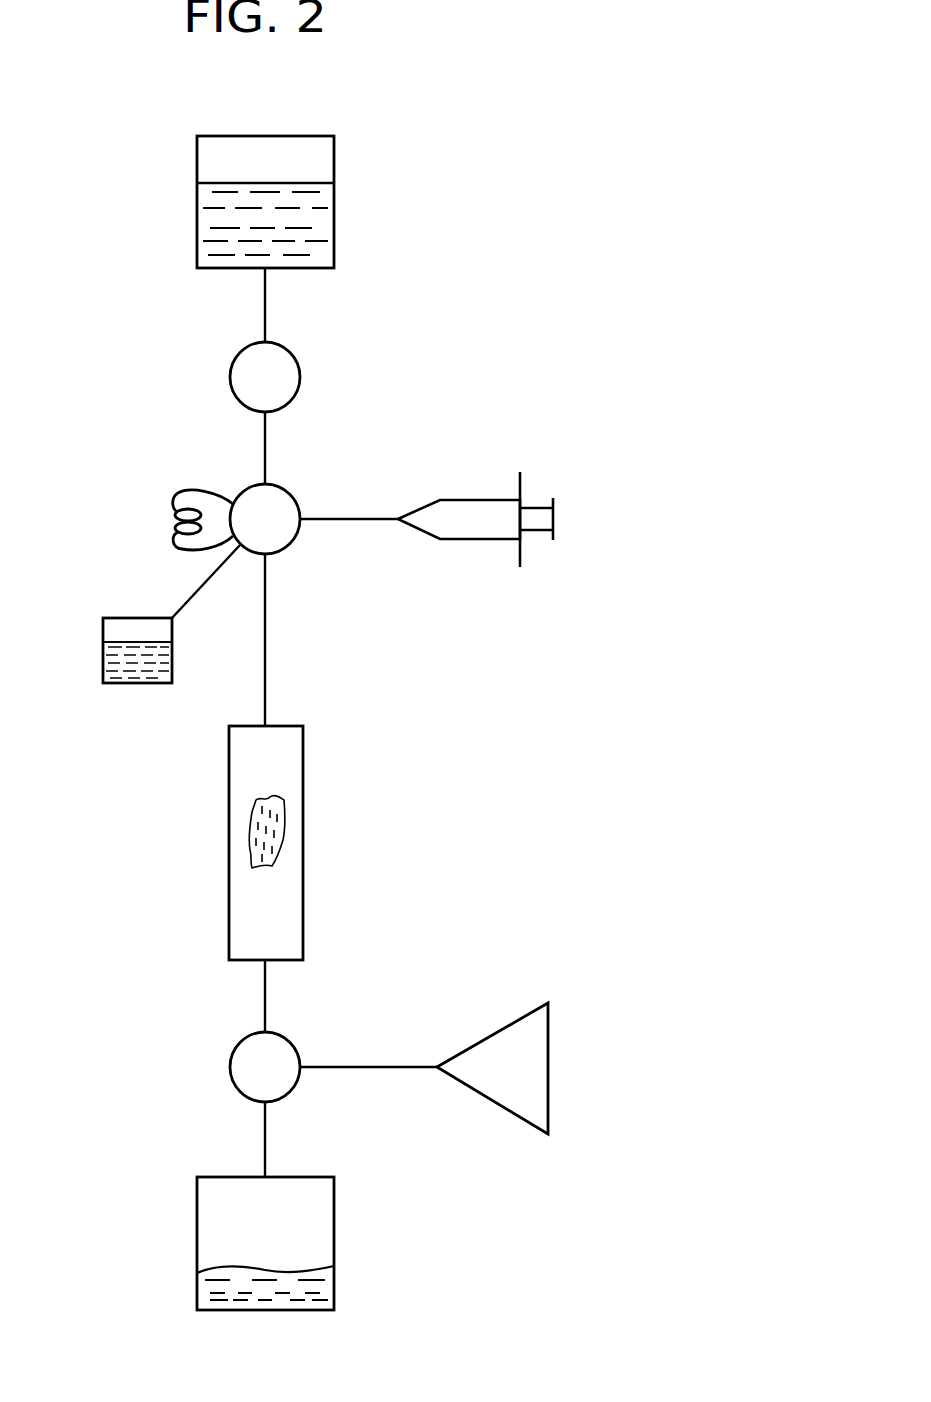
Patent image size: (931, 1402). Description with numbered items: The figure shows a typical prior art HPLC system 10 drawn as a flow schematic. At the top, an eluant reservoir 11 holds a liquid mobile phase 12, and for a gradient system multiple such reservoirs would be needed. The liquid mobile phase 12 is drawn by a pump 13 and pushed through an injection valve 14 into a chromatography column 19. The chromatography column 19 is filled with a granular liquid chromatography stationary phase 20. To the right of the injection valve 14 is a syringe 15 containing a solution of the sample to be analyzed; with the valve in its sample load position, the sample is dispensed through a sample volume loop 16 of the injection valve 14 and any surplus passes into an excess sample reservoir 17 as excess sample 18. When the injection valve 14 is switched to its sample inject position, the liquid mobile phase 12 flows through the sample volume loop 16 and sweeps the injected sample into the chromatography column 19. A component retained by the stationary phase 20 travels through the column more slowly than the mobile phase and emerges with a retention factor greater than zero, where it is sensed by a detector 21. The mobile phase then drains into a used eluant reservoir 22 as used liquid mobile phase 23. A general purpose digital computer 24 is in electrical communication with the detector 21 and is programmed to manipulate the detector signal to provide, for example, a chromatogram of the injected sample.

The HPLC system 10 is at (538, 263).
The eluant reservoir 11 is at (334, 226).
The liquid mobile phase 12 is at (212, 236).
The pump 13 is at (285, 356).
The injection valve 14 is at (287, 503).
The syringe 15 is at (468, 539).
The sample volume loop 16 is at (177, 493).
The excess sample reservoir 17 is at (103, 665).
The excess sample 18 is at (134, 675).
The chromatography column 19 is at (303, 758).
The liquid chromatography stationary phase 20 is at (272, 838).
The detector 21 is at (243, 1074).
The used eluant reservoir 22 is at (197, 1221).
The used liquid mobile phase 23 is at (320, 1285).
The general purpose digital computer 24 is at (537, 1085).